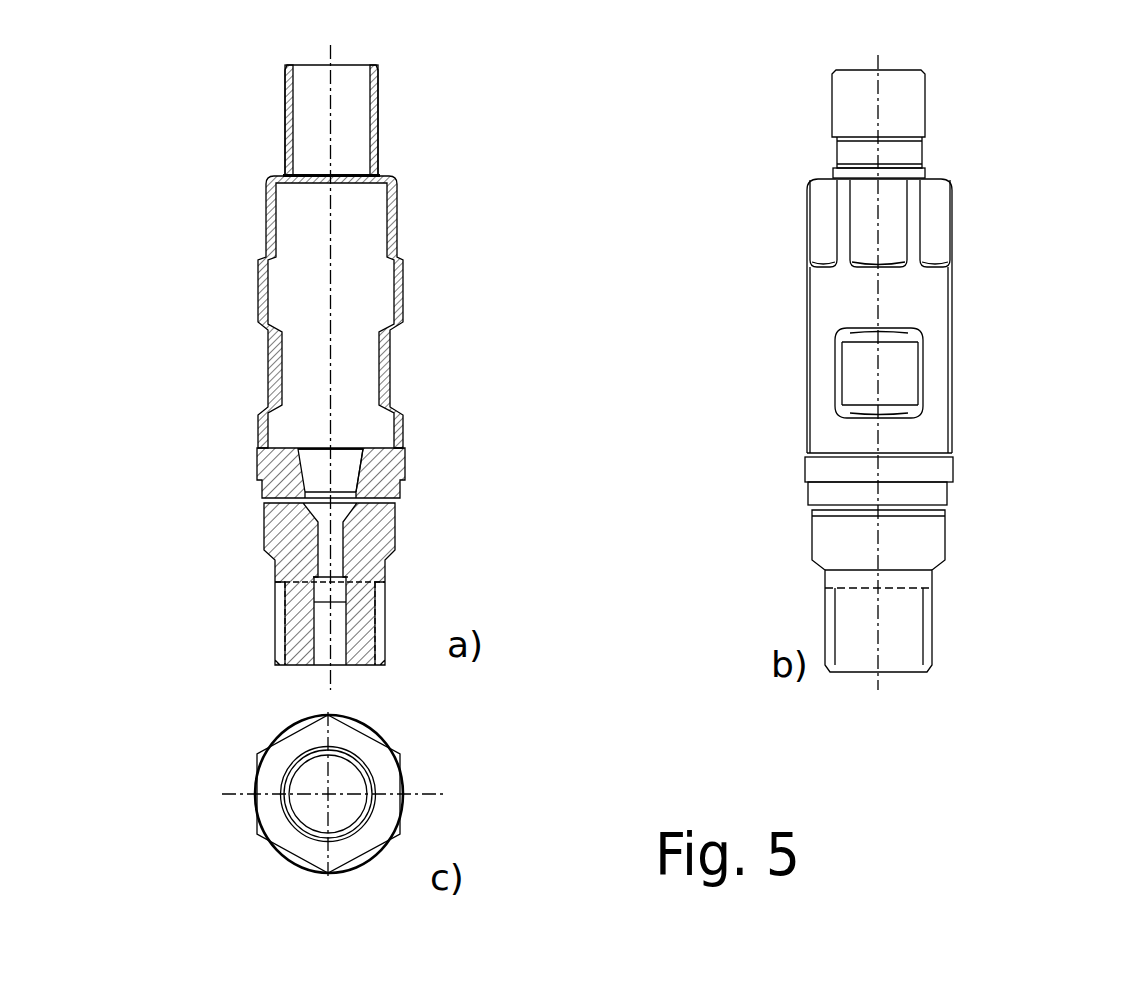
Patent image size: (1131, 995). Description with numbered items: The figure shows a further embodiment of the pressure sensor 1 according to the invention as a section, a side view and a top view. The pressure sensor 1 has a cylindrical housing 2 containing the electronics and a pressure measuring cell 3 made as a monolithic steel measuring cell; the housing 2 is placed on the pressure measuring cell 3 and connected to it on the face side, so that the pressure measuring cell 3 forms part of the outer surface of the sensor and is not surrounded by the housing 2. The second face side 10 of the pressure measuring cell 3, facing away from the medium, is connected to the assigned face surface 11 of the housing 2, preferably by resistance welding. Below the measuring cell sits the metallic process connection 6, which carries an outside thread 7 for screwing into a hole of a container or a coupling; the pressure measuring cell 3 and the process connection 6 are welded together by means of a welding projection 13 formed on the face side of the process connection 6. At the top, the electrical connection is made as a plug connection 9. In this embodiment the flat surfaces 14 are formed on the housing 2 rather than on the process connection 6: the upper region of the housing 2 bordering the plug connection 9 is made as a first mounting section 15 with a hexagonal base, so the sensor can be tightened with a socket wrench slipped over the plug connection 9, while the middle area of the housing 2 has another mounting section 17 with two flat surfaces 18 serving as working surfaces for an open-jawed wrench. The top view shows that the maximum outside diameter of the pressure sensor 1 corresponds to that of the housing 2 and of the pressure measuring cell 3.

The pressure sensor 1 is at (733, 205).
The housing 2 is at (266, 202).
The pressure measuring cell 3 is at (257, 462).
The process connection 6 is at (257, 552).
The outside thread 7 is at (283, 613).
The plug connection 9 is at (287, 92).
The second face side 10 is at (399, 452).
The face surface 11 is at (396, 450).
The welding projection 13 is at (398, 522).
The flat surfaces 14 is at (890, 220).
The first mounting section 15 is at (962, 233).
The mounting section 17 is at (262, 350).
The flat surfaces 18 is at (388, 362).